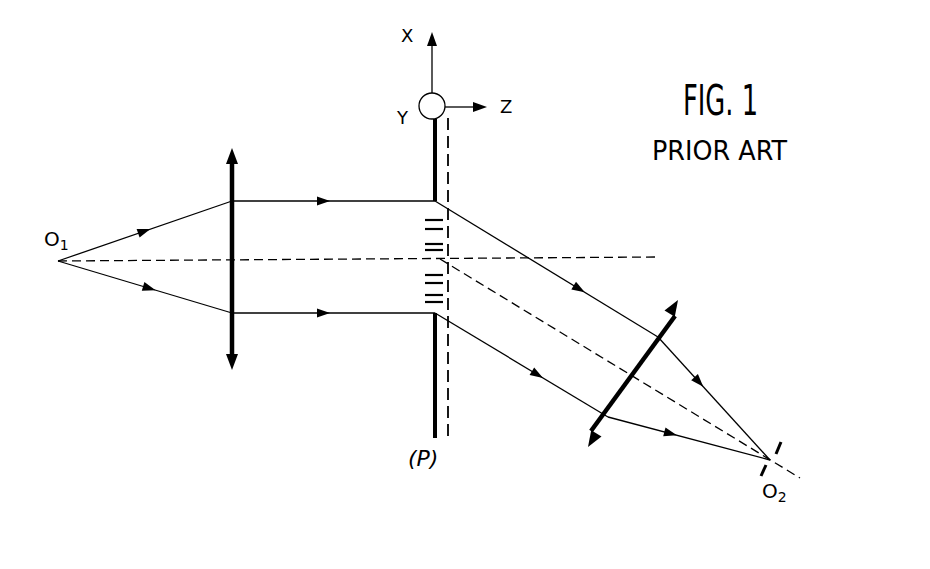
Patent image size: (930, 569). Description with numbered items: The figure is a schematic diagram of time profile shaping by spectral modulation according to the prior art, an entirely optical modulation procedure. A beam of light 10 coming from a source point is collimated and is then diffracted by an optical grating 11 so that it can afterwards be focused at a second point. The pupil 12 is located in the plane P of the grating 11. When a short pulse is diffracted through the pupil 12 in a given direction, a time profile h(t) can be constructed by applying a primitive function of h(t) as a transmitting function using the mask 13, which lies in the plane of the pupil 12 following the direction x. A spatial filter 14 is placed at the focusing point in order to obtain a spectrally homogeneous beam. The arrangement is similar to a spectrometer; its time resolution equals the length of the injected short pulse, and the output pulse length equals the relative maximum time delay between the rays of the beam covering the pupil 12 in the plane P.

The beam of light 10 is at (277, 201).
The optical grating 11 is at (430, 289).
The pupil 12 is at (432, 418).
The mask 13 is at (449, 153).
The spatial filter 14 is at (760, 466).